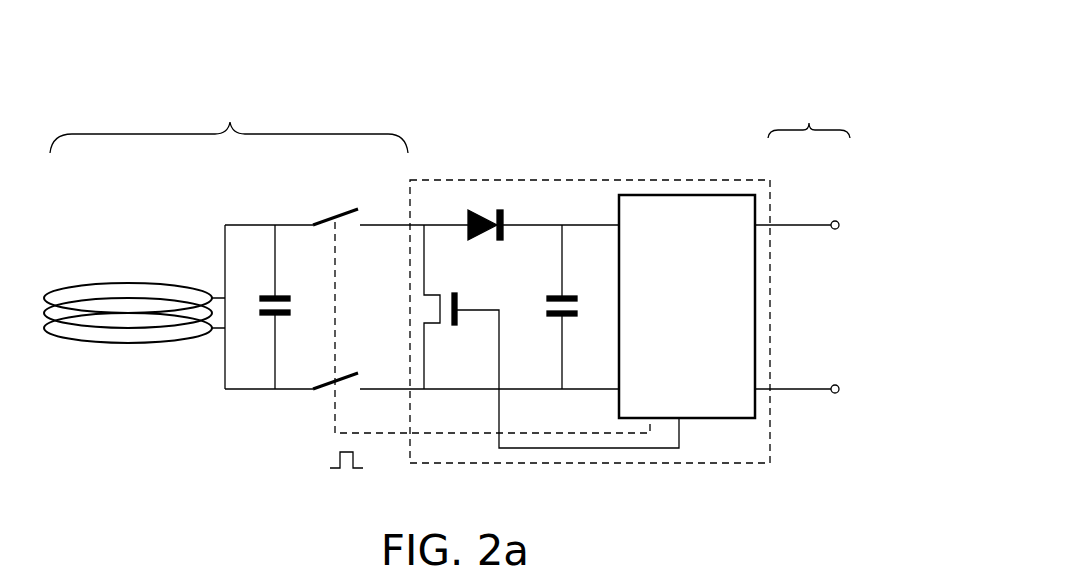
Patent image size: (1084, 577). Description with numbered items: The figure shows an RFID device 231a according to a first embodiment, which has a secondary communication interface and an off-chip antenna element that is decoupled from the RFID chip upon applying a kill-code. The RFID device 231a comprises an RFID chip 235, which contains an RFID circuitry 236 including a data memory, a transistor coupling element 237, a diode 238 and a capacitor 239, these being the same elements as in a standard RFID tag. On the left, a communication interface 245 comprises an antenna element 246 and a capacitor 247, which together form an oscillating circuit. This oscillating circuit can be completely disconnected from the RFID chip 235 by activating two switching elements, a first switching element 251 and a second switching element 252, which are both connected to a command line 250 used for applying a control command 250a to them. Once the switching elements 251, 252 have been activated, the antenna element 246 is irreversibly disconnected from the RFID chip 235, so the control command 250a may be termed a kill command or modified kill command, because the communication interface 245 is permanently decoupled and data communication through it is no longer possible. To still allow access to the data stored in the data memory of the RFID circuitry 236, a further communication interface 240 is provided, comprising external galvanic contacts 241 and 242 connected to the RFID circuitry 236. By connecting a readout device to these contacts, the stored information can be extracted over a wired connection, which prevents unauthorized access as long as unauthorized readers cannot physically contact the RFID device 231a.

The RFID device 231a is at (700, 77).
The communication interface 245 is at (229, 123).
The antenna element 246 is at (143, 285).
The capacitor 247 is at (268, 318).
The first switching element 251 is at (341, 212).
The second switching element 252 is at (348, 372).
The command line 250 is at (338, 268).
The control command 250a is at (336, 458).
The RFID chip 235 is at (606, 178).
The diode 238 is at (485, 210).
The transistor coupling element 237 is at (465, 300).
The capacitor 239 is at (572, 320).
The RFID circuitry 236 is at (687, 306).
The further communication interface 240 is at (809, 116).
The external galvanic contact 241 is at (835, 219).
The external galvanic contact 242 is at (835, 384).